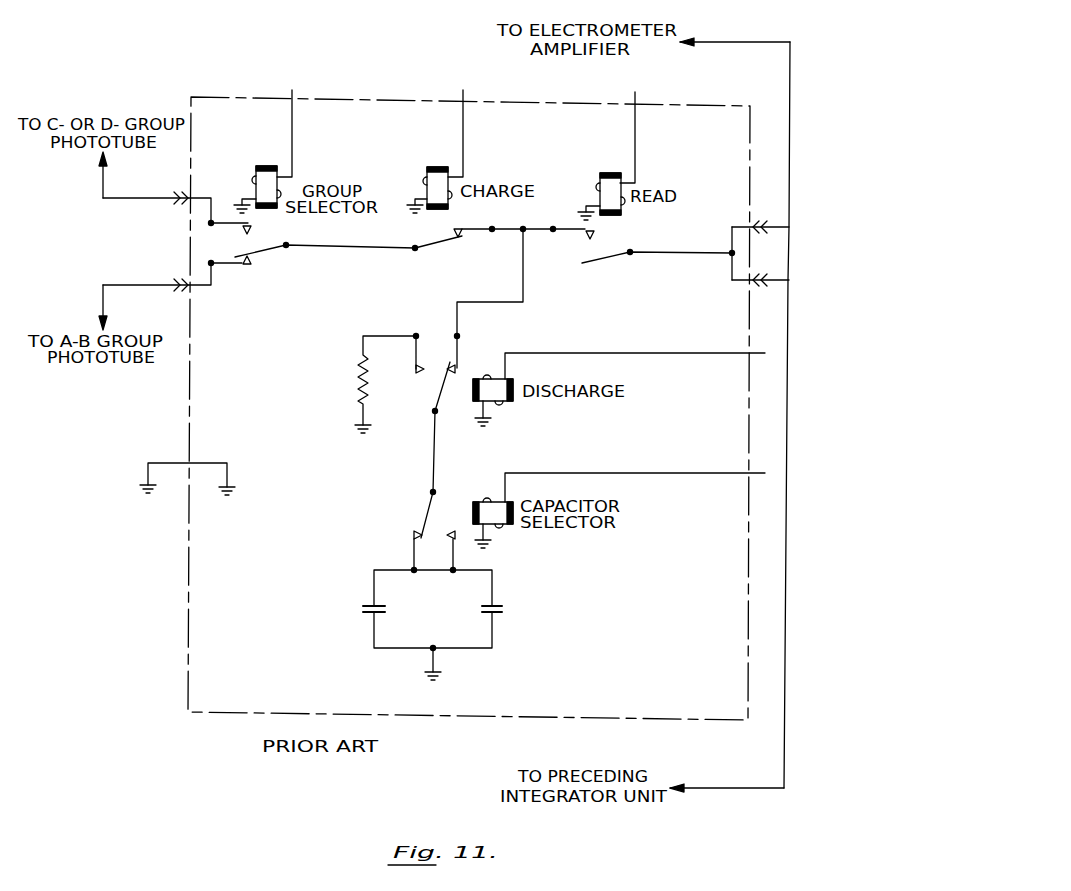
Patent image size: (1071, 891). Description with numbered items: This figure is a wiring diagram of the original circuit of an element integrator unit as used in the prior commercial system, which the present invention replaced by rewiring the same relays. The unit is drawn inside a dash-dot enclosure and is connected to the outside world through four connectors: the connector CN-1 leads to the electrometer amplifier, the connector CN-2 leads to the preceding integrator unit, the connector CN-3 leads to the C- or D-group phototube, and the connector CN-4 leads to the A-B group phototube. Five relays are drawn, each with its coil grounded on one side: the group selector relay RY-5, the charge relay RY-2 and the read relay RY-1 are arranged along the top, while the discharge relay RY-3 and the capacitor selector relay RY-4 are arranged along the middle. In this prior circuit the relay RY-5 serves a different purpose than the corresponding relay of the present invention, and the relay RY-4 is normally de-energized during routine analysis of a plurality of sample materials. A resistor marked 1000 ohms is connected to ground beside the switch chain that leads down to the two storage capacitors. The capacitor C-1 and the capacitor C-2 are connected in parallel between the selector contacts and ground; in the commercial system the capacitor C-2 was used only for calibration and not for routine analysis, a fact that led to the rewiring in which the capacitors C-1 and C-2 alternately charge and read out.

The read relay RY-1 is at (610, 172).
The charge relay RY-2 is at (438, 166).
The discharge relay RY-3 is at (509, 378).
The capacitor selector relay RY-4 is at (507, 500).
The group selector relay RY-5 is at (266, 165).
The connector to electrometer amplifier CN-1 is at (760, 216).
The connector to preceding integrator unit CN-2 is at (760, 291).
The connector to C- or D-group phototube CN-3 is at (177, 200).
The connector to A-B group phototube CN-4 is at (177, 286).
The capacitor C-1 is at (363, 609).
The capacitor C-2 is at (502, 609).
The 1000 ohm resistor 1000 is at (365, 383).